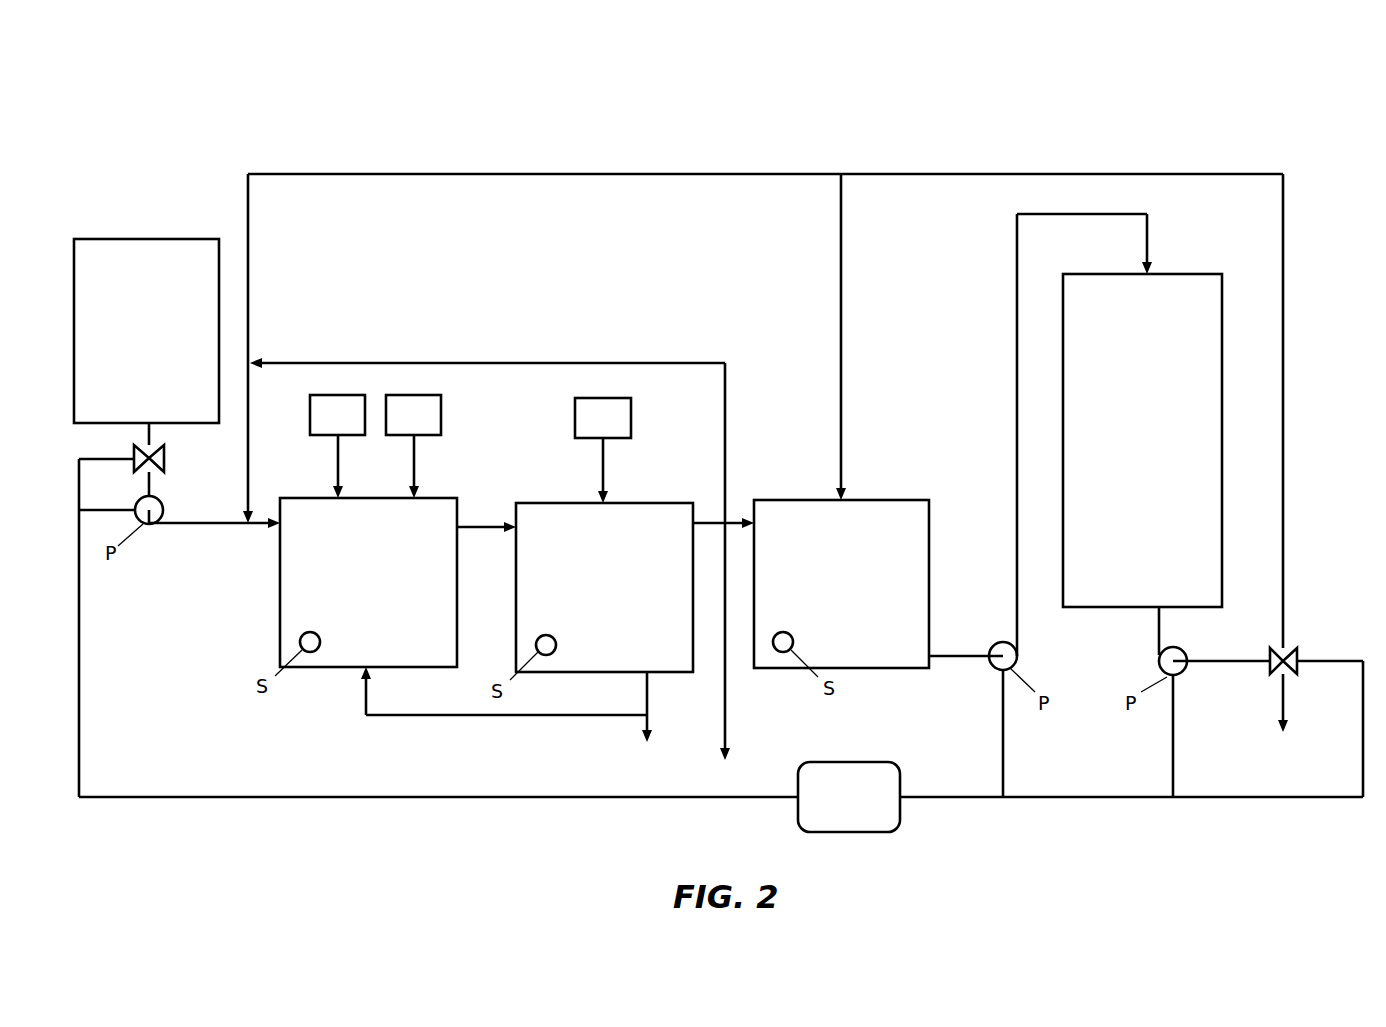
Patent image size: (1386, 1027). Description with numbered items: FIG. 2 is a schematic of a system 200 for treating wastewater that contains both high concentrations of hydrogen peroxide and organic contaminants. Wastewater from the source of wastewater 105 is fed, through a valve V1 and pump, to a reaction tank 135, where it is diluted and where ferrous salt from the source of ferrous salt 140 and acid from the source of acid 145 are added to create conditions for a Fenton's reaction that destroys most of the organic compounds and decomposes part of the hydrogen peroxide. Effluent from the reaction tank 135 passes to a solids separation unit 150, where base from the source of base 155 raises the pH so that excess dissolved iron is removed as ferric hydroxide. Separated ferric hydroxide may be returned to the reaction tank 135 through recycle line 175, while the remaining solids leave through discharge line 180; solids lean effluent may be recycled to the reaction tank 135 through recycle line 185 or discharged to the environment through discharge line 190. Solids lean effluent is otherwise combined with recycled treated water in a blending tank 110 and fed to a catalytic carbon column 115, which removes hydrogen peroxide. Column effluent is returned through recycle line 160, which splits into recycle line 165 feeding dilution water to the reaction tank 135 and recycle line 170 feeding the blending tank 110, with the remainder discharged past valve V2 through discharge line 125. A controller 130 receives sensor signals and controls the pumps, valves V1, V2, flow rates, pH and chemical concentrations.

The system 200 is at (196, 115).
The source of wastewater 105 is at (146, 331).
The valve V1 is at (136, 468).
The valve V2 is at (1290, 652).
The blending tank 110 is at (841, 584).
The catalytic carbon column 115 is at (1142, 440).
The discharge line 125 is at (1283, 683).
The controller 130 is at (849, 797).
The reaction tank 135 is at (368, 582).
The source of ferrous salt 140 is at (337, 446).
The source of acid 145 is at (413, 446).
The solids separation unit 150 is at (604, 587).
The source of base 155 is at (603, 450).
The recycle line 160 is at (1036, 172).
The recycle line 165 is at (385, 173).
The recycle line 170 is at (843, 303).
The recycle line 175 is at (457, 717).
The discharge line 180 is at (648, 720).
The recycle line 185 is at (440, 360).
The discharge line 190 is at (727, 728).